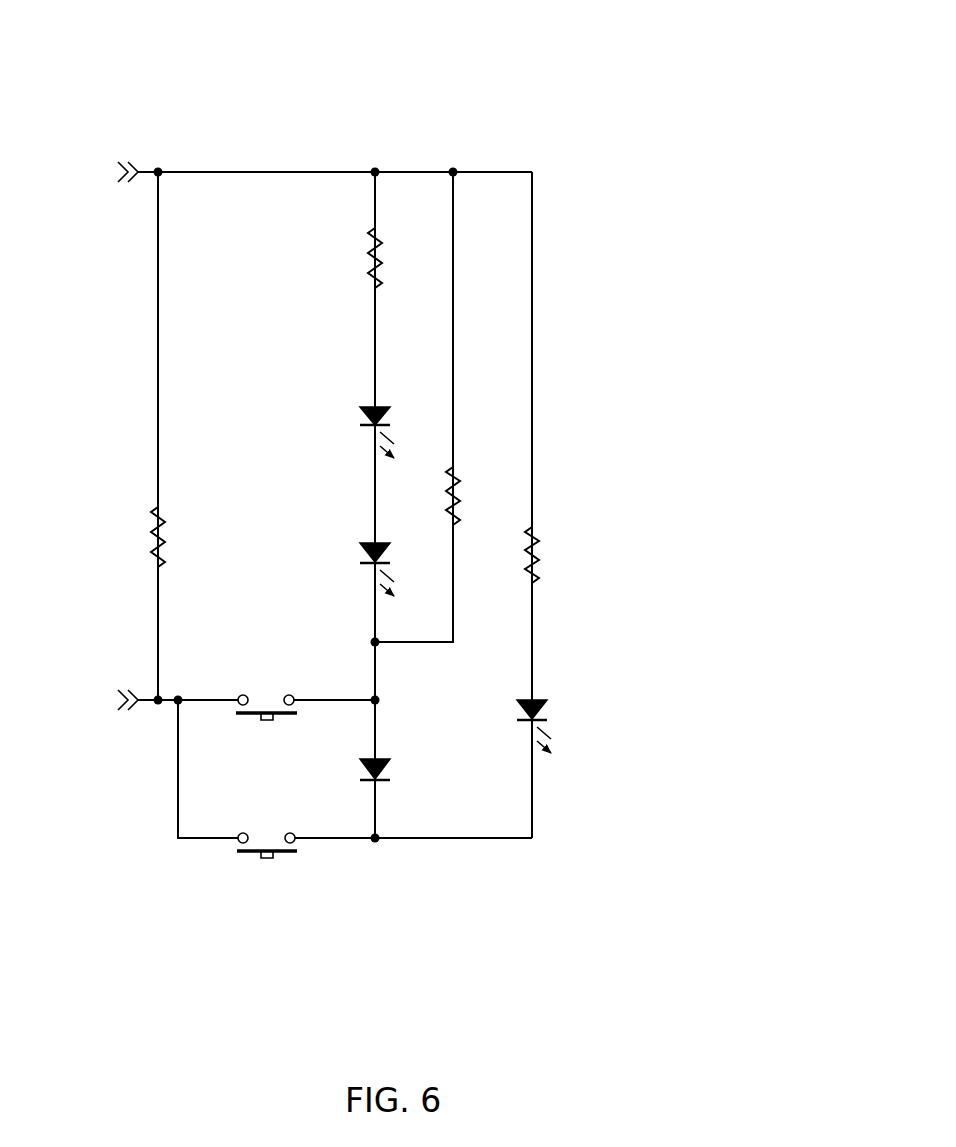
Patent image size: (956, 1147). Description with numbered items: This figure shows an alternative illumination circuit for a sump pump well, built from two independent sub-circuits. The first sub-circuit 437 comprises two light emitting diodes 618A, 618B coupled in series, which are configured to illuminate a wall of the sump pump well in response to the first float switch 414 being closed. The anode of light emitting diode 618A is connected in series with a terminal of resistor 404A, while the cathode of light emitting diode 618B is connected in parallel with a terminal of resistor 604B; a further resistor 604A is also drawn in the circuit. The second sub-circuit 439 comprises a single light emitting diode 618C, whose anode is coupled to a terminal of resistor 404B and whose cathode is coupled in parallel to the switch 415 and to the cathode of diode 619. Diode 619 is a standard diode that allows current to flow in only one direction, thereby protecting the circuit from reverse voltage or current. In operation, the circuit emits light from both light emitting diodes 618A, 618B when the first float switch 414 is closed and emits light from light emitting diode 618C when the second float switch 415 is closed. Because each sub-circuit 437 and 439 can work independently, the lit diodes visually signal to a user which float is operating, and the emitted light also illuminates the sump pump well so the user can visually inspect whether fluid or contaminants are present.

The first sub-circuit 437 is at (307, 145).
The second sub-circuit 439 is at (662, 676).
The resistor 404A is at (370, 248).
The resistor 404B is at (536, 536).
The resistor 604A is at (156, 520).
The resistor 604B is at (455, 470).
The light emitting diode 618A is at (362, 413).
The light emitting diode 618B is at (362, 548).
The light emitting diode 618C is at (542, 707).
The diode 619 is at (393, 760).
The first float switch 414 is at (255, 716).
The switch 415 is at (240, 854).